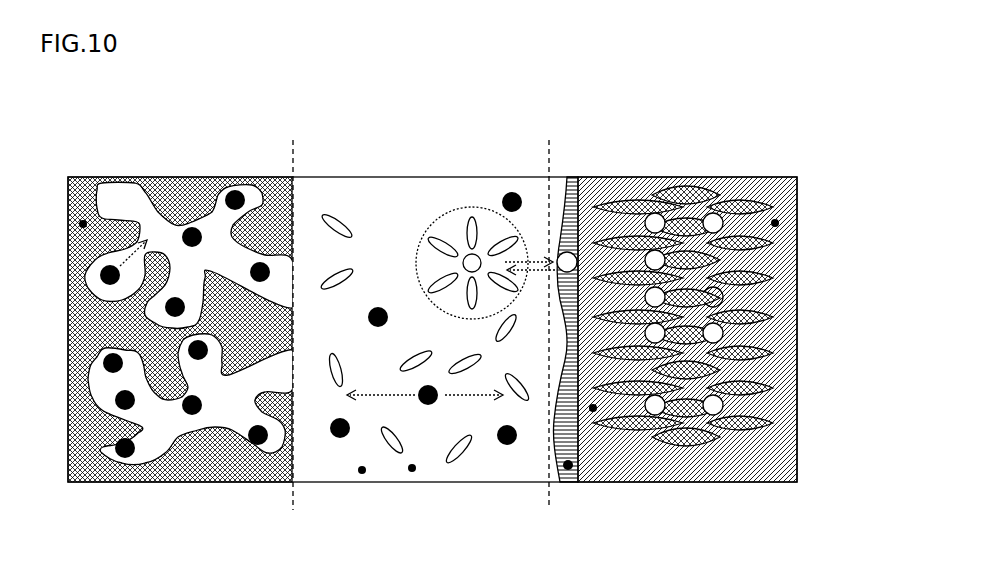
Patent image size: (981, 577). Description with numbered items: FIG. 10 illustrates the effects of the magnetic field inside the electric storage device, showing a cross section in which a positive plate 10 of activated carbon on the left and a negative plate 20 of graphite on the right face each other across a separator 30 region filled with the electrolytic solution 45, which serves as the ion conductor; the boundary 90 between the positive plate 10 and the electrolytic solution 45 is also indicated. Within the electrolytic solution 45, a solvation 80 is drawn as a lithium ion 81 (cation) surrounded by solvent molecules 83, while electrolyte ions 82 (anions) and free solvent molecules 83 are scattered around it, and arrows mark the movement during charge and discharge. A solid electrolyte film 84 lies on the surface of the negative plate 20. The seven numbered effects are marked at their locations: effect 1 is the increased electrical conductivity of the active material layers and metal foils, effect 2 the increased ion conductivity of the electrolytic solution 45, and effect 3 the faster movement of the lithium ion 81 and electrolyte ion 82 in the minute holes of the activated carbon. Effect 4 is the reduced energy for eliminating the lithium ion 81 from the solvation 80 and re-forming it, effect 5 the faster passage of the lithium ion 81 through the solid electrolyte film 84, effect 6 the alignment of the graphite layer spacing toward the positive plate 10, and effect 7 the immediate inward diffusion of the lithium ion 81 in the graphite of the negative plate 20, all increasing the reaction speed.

The positive plate 10 is at (70, 141).
The negative plate 20 is at (558, 141).
The separator 30 is at (538, 141).
The interface 90 is at (293, 245).
The solvation 80 is at (598, 223).
The lithium ion 81 is at (448, 240).
The electrolyte ion 82 is at (338, 437).
The solvent molecule 83 is at (463, 446).
The solid electrolyte film 84 is at (567, 471).
The electrolytic solution 45 is at (418, 473).
The effect 1 is at (80, 224).
The effect 2 is at (361, 475).
The effect 3 is at (95, 258).
The effect 4 is at (505, 242).
The effect 5 is at (550, 258).
The effect 6 is at (595, 412).
The effect 7 is at (592, 272).